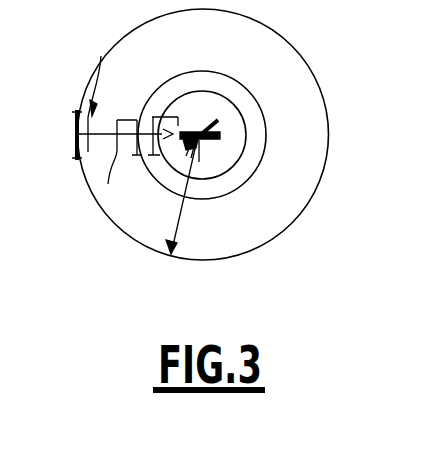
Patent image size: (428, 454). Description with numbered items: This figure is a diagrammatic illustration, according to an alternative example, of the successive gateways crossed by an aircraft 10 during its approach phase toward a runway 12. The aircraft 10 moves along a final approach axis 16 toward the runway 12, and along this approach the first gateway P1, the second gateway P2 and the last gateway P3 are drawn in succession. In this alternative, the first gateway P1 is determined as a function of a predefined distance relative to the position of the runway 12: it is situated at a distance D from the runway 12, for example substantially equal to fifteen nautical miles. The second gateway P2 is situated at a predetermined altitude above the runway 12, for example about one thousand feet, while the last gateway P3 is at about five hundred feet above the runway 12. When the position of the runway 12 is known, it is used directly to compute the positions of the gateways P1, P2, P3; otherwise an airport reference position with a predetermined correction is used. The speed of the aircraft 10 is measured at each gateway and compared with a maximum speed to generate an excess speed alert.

The aircraft 10 is at (101, 56).
The first gateway P1 is at (75, 150).
The second gateway P2 is at (125, 120).
The last gateway P3 is at (168, 117).
The final approach axis 16 is at (113, 163).
The runway 12 is at (220, 137).
The distance D is at (182, 214).